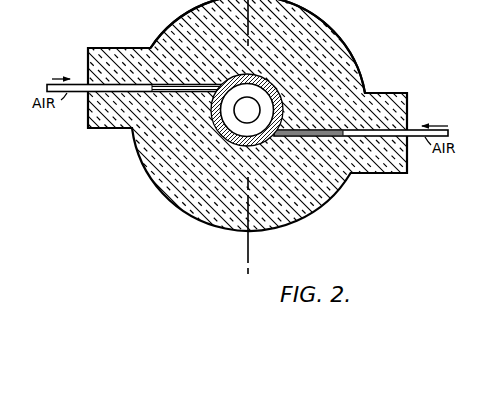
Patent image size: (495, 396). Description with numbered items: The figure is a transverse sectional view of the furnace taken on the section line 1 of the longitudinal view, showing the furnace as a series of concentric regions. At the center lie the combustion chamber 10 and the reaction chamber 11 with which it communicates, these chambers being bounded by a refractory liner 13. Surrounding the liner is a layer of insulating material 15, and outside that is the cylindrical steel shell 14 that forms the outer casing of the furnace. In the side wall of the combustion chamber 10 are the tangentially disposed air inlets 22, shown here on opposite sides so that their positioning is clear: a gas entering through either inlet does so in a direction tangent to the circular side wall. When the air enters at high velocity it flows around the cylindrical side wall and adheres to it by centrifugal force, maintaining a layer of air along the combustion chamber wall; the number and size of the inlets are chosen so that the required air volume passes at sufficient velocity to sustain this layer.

The section line / axis 1 is at (250, 247).
The combustion chamber 10 is at (270, 96).
The reaction chamber 11 is at (252, 110).
The refractory liner 13 is at (263, 81).
The cylindrical steel shell 14 is at (186, 214).
The layer of insulating material 15 is at (357, 73).
The tangentially disposed air inlets 22 is at (207, 83).